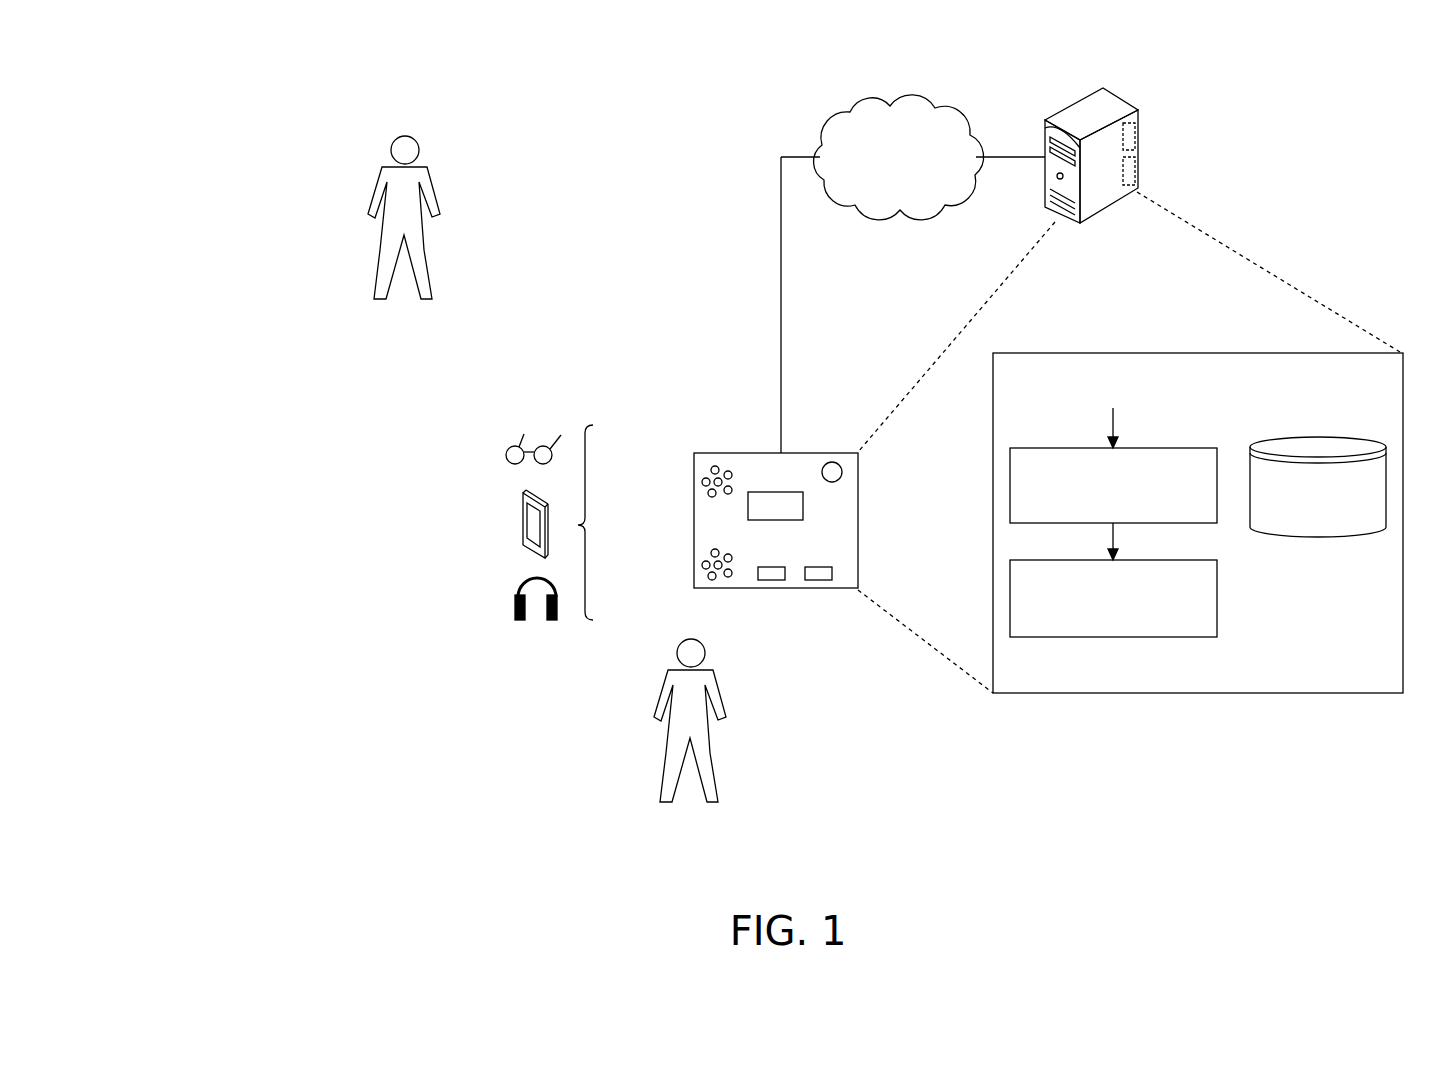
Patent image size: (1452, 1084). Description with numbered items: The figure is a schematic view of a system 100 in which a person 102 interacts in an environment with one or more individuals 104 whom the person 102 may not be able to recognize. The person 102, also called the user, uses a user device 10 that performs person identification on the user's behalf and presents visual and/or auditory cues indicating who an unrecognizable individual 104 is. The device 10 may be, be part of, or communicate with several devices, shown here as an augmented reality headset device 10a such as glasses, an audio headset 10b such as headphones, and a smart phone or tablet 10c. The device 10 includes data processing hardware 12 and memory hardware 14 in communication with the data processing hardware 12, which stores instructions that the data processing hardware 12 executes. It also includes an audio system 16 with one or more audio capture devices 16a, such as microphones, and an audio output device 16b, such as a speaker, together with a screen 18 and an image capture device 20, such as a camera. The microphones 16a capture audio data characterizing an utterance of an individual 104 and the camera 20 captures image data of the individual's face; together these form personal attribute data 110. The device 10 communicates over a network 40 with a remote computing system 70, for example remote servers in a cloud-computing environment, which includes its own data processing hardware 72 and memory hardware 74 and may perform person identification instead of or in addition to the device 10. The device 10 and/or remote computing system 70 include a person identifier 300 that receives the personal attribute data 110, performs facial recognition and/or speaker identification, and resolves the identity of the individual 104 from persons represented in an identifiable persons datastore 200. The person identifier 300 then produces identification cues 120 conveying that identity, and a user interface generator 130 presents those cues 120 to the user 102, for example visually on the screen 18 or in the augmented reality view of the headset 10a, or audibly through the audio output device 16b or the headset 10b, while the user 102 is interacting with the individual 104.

The system 100 is at (248, 94).
The unrecognizable individual 104 is at (380, 266).
The person 102 is at (672, 737).
The user device 10 is at (754, 514).
The augmented reality headset device 10a is at (507, 453).
The audio headset 10b is at (516, 606).
The smart phone or tablet 10c is at (521, 520).
The data processing hardware 12 is at (770, 567).
The memory hardware 14 is at (818, 567).
The audio system 16 is at (690, 514).
The audio capture device 16a is at (698, 575).
The audio output device 16b is at (721, 466).
The screen 18 is at (803, 507).
The image capture device 20 is at (832, 462).
The network 40 is at (909, 178).
The remote computing system 70 is at (1101, 145).
The data processing hardware 72 is at (1136, 135).
The memory hardware 74 is at (1136, 172).
The personal attribute data 110 is at (1117, 412).
The identification cue 120 is at (1117, 532).
The user interface generator 130 is at (1181, 621).
The identifiable persons datastore 200 is at (1376, 527).
The person identifier 300 is at (1097, 509).